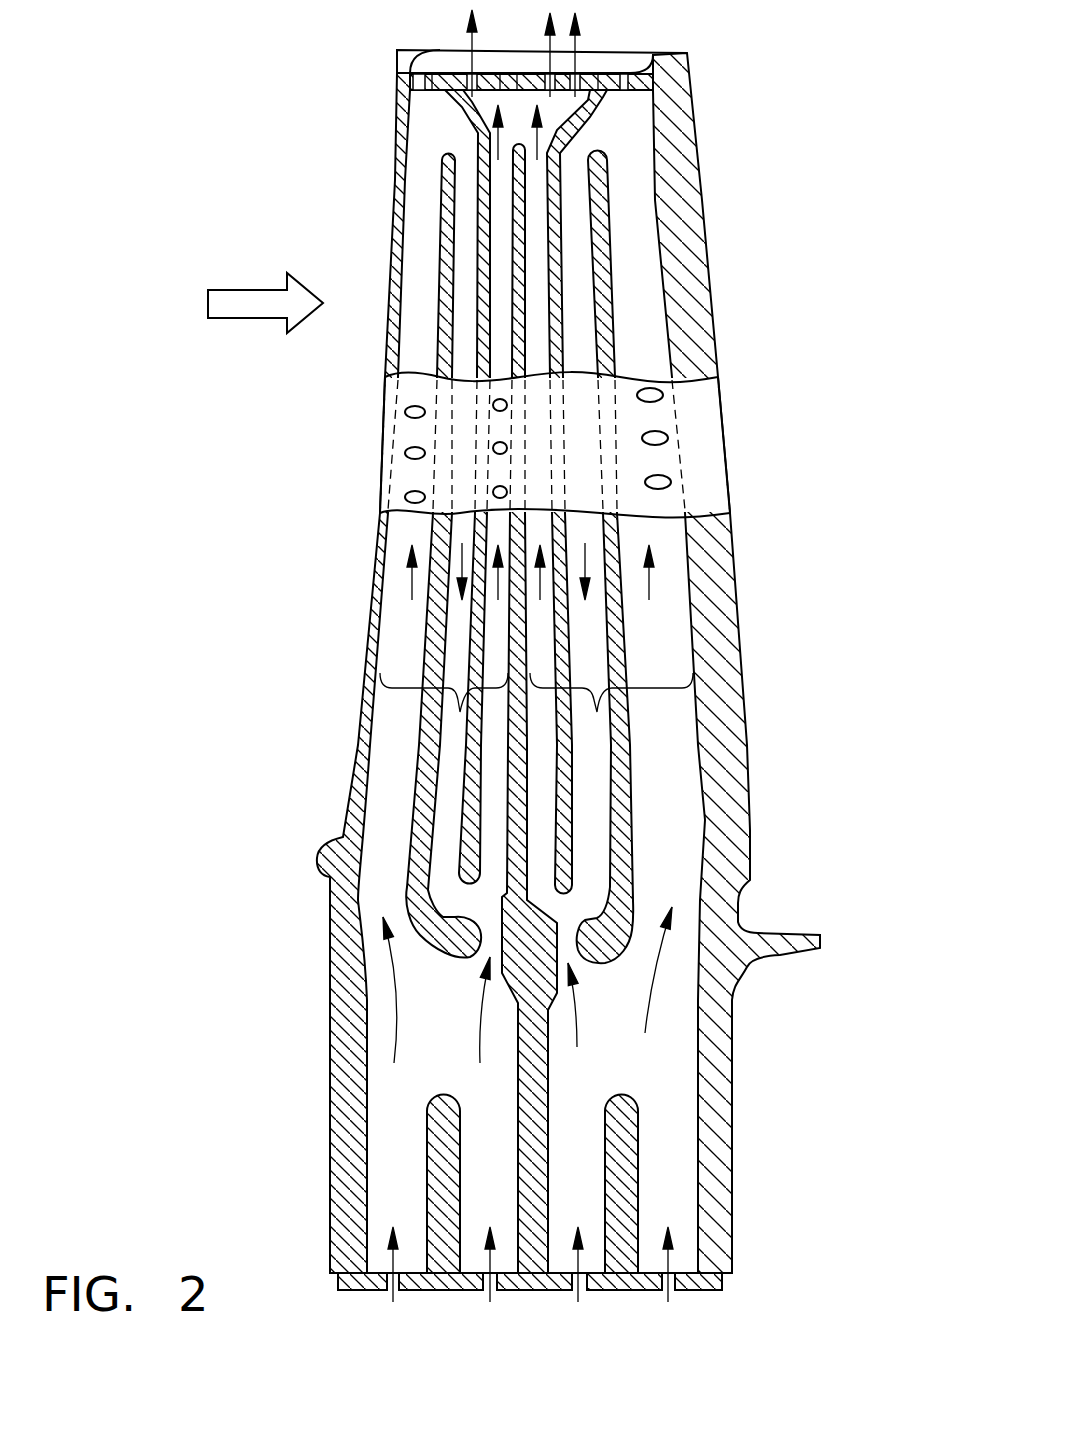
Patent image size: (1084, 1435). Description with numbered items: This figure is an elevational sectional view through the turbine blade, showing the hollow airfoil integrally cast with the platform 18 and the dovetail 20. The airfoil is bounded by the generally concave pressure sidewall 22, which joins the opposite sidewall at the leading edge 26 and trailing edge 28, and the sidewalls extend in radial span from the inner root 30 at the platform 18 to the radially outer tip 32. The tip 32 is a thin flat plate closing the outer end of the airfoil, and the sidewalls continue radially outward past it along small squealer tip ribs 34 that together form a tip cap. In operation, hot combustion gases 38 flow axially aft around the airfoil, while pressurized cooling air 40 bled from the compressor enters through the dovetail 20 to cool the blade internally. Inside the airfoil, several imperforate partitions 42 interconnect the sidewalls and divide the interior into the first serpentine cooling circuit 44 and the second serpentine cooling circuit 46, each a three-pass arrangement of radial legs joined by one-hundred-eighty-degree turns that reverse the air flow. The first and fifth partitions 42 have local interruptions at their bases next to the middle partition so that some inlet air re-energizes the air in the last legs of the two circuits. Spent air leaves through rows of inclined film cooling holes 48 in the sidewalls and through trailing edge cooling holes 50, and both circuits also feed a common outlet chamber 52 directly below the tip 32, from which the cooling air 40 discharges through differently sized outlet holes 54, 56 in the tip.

The platform 18 is at (780, 930).
The dovetail 20 is at (733, 1167).
The pressure sidewall 22 is at (601, 450).
The leading edge 26 is at (383, 428).
The trailing edge 28 is at (722, 395).
The inner root 30 is at (340, 837).
The tip 32 is at (437, 68).
The squealer tip ribs 34 is at (628, 52).
The combustion gases 38 is at (242, 290).
The cooling air 40 is at (583, 1262).
The partitions 42 is at (606, 180).
The first serpentine cooling circuit 44 is at (459, 712).
The second serpentine cooling circuit 46 is at (596, 712).
The film cooling holes 48 is at (418, 497).
The trailing edge cooling holes 50 is at (655, 483).
The outlet chamber 52 is at (563, 102).
The outlet holes 54 is at (518, 88).
The outlet holes 56 is at (583, 73).